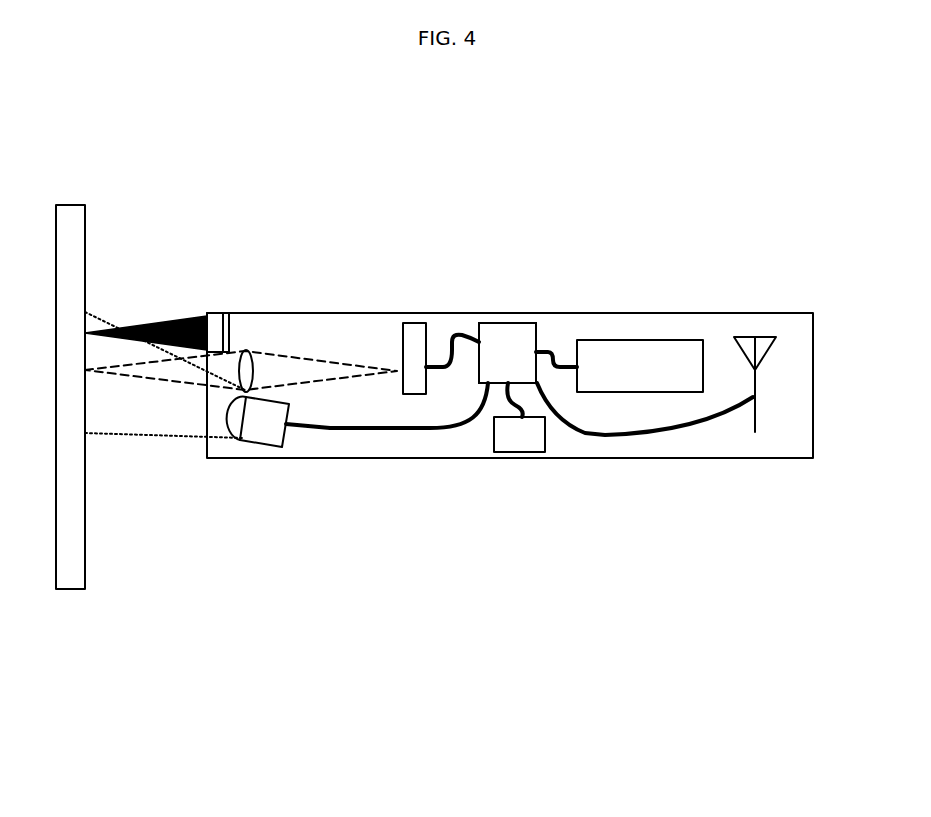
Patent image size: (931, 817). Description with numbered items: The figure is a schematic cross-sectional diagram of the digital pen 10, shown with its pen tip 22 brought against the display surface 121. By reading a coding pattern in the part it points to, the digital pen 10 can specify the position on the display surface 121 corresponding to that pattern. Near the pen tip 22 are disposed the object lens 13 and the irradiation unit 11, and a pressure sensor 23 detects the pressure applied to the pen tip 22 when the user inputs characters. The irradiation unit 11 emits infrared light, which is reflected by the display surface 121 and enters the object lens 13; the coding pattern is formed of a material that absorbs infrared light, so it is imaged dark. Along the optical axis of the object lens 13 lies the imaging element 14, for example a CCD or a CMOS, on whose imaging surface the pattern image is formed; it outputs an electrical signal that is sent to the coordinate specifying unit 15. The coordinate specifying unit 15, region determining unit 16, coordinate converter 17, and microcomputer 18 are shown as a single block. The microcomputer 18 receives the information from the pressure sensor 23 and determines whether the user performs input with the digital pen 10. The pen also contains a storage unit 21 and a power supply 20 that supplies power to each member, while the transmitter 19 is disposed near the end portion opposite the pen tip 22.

The digital pen 10 is at (788, 313).
The irradiation unit 11 is at (262, 443).
The object lens 13 is at (247, 349).
The imaging element 14 is at (417, 394).
The coordinate specifying unit 15 is at (507, 322).
The region determining unit 16 is at (507, 353).
The coordinate converter 17 is at (507, 353).
The microcomputer 18 is at (507, 353).
The transmitter 19 is at (755, 385).
The power supply 20 is at (618, 340).
The storage unit 21 is at (530, 452).
The pen tip 22 is at (150, 324).
The pressure sensor 23 is at (212, 312).
The display surface 121 is at (85, 567).